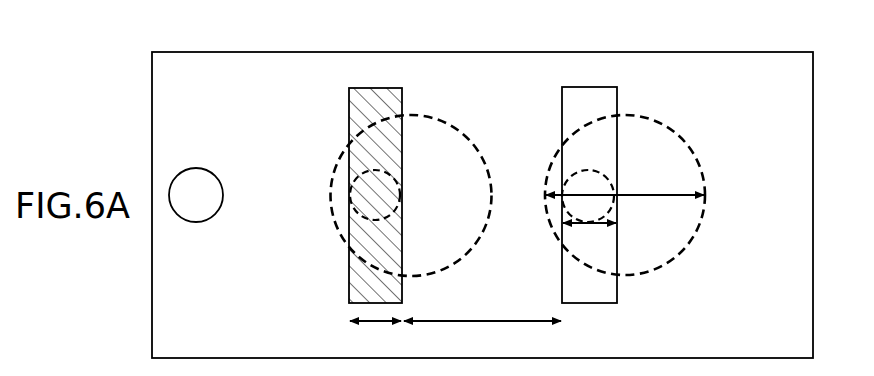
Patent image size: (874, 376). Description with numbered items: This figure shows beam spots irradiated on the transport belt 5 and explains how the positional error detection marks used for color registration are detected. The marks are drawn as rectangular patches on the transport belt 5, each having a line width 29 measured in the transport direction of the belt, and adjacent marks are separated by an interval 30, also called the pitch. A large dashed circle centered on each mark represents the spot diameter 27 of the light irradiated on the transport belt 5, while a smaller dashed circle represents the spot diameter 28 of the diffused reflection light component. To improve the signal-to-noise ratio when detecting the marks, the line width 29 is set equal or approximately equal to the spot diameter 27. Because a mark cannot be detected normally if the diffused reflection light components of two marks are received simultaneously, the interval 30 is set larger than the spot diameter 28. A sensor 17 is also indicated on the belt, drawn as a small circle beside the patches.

The transport belt 5 is at (795, 52).
The optical sensor (or 18, 19) 17 is at (192, 178).
The spot diameter 27 is at (430, 117).
The spot diameter of the diffused reflection light component 28 is at (398, 142).
The line width 29 is at (375, 335).
The interval 30 is at (482, 335).